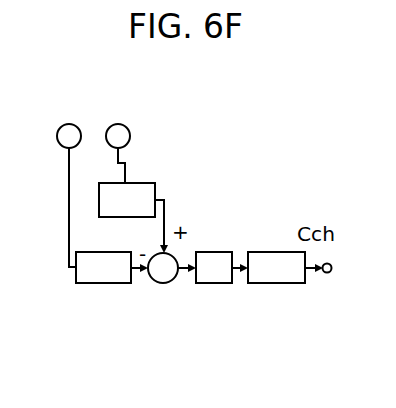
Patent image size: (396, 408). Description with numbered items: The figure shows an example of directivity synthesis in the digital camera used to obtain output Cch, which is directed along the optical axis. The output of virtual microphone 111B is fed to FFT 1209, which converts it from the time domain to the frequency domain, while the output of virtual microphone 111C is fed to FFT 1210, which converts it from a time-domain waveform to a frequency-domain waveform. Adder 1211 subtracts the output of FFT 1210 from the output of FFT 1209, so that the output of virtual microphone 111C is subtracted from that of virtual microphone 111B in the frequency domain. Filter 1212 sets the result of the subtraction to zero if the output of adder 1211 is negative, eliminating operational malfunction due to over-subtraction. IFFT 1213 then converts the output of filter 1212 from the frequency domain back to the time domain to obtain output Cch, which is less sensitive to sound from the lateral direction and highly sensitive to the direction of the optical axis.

The virtual microphone 111C is at (72, 124).
The virtual microphone 111B is at (127, 124).
The FFT 1209 is at (157, 183).
The FFT 1210 is at (98, 283).
The adder 1211 is at (162, 283).
The filter 1212 is at (208, 283).
The IFFT 1213 is at (285, 283).